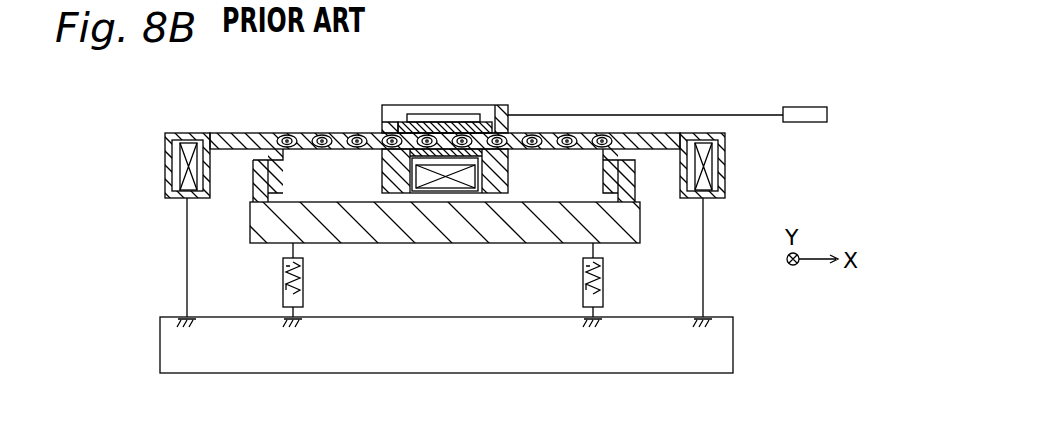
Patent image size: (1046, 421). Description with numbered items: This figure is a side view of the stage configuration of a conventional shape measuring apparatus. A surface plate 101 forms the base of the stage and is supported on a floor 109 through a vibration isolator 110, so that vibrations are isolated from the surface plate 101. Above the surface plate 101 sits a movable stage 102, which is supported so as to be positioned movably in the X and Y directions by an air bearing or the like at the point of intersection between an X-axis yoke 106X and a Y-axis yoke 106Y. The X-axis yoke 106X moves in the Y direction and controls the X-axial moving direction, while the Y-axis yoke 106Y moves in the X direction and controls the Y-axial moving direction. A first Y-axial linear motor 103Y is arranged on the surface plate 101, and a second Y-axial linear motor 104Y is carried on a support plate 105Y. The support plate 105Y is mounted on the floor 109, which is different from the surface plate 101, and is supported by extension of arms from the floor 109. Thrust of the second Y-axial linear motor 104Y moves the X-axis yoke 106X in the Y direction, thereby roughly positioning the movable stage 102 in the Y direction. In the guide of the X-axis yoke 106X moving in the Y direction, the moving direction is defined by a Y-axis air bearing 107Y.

The surface plate 101 is at (262, 232).
The movable stage 102 is at (523, 210).
The first Y-axial linear motor 103Y is at (523, 210).
The second Y-axial linear motor 104Y is at (167, 160).
The support plate 105Y is at (187, 272).
The X-axis yoke 106X is at (341, 104).
The Y-axis yoke 106Y is at (423, 182).
The Y-axis air bearing 107Y is at (272, 160).
The floor 109 is at (705, 358).
The vibration isolator 110 is at (305, 287).